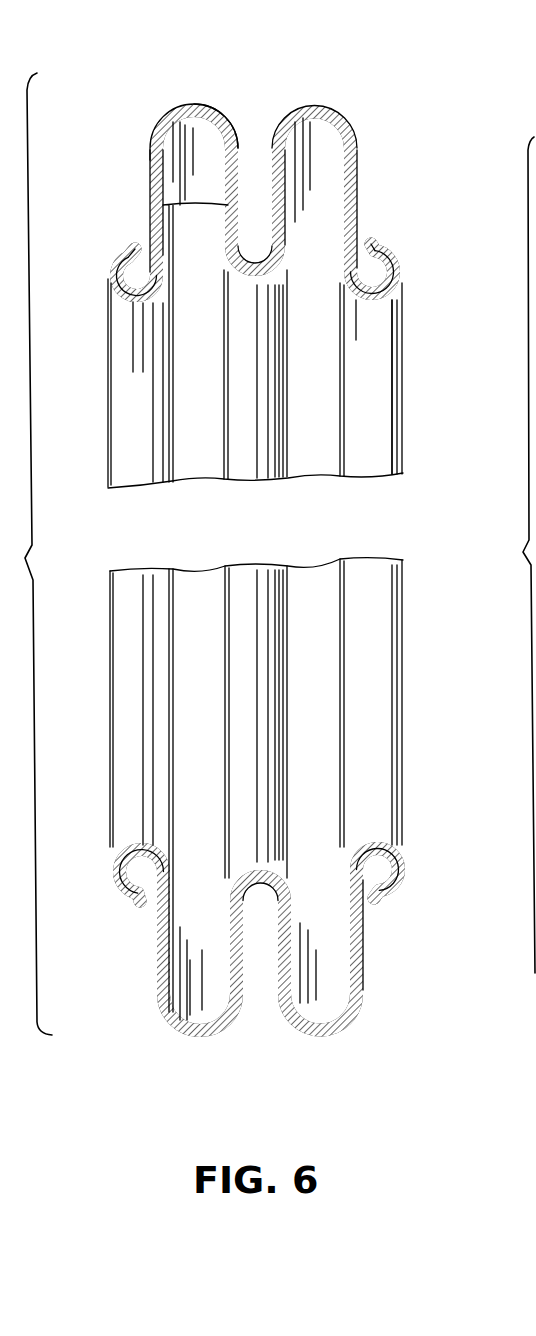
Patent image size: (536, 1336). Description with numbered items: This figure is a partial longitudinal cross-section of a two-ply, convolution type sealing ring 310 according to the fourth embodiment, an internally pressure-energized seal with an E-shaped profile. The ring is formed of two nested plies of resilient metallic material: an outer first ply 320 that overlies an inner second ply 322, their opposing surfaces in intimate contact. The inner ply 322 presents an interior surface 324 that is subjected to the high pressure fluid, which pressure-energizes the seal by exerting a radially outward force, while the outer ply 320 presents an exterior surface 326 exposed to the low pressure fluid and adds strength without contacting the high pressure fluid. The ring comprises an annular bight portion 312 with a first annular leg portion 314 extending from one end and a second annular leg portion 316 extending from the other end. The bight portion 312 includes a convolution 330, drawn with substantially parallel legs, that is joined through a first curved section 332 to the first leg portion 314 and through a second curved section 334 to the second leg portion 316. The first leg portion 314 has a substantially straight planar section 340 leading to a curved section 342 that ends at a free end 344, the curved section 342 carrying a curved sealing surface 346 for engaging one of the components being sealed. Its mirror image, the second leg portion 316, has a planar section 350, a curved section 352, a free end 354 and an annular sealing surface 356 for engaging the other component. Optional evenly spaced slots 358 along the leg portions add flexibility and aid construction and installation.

The two-ply convolution type sealing ring 310 is at (368, 116).
The annular bight portion 312 is at (190, 100).
The first annular leg portion 314 is at (116, 370).
The second annular leg portion 316 is at (396, 355).
The first ply 320 is at (150, 138).
The second ply 322 is at (150, 170).
The interior surface 324 is at (165, 203).
The exterior surface 326 is at (262, 178).
The convolution 330 is at (255, 237).
The first curved section 332 is at (212, 100).
The second curved section 334 is at (322, 103).
The planar section 340 is at (170, 265).
The curved section 342 is at (134, 302).
The free end 344 is at (132, 240).
The curved sealing surface 346 is at (112, 286).
The planar section 350 is at (345, 262).
The curved section 352 is at (358, 278).
The free end 354 is at (382, 244).
The annular sealing surface 356 is at (400, 272).
The slots 358 is at (358, 158).